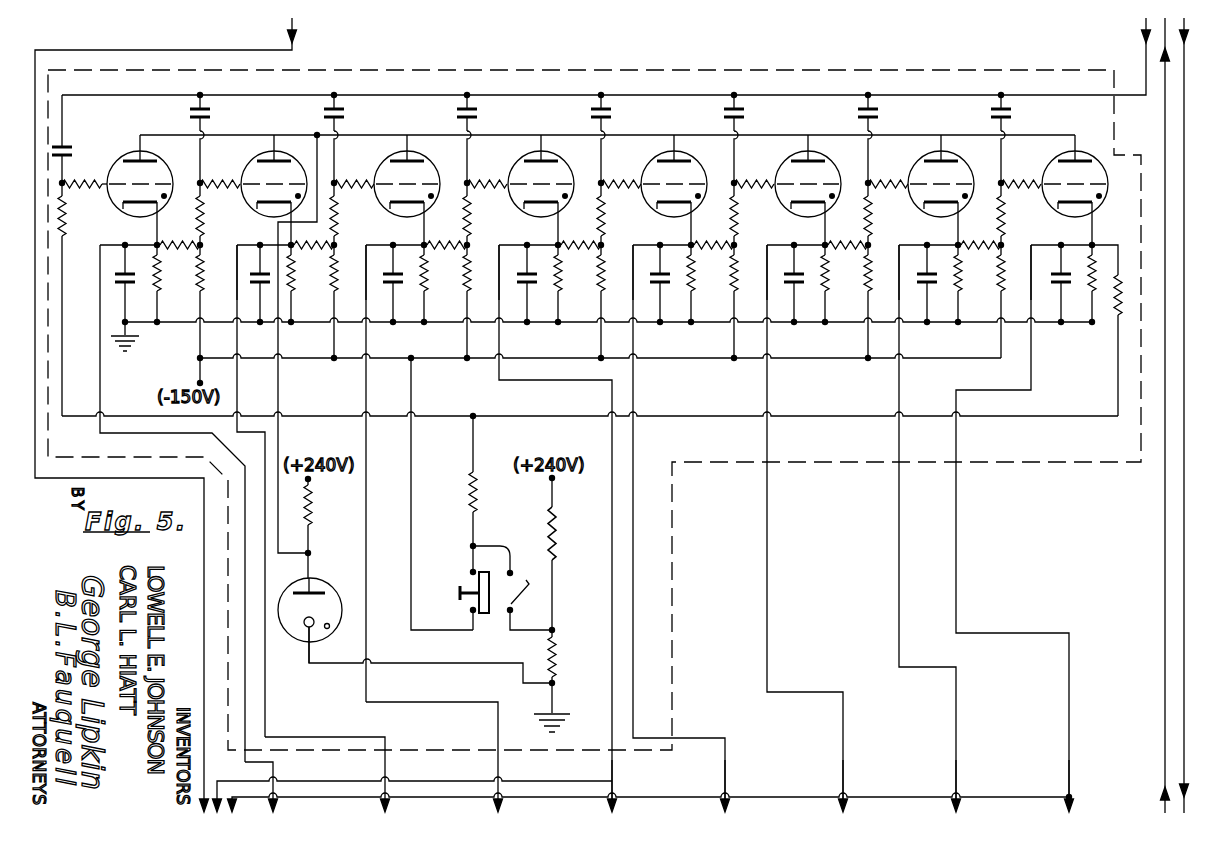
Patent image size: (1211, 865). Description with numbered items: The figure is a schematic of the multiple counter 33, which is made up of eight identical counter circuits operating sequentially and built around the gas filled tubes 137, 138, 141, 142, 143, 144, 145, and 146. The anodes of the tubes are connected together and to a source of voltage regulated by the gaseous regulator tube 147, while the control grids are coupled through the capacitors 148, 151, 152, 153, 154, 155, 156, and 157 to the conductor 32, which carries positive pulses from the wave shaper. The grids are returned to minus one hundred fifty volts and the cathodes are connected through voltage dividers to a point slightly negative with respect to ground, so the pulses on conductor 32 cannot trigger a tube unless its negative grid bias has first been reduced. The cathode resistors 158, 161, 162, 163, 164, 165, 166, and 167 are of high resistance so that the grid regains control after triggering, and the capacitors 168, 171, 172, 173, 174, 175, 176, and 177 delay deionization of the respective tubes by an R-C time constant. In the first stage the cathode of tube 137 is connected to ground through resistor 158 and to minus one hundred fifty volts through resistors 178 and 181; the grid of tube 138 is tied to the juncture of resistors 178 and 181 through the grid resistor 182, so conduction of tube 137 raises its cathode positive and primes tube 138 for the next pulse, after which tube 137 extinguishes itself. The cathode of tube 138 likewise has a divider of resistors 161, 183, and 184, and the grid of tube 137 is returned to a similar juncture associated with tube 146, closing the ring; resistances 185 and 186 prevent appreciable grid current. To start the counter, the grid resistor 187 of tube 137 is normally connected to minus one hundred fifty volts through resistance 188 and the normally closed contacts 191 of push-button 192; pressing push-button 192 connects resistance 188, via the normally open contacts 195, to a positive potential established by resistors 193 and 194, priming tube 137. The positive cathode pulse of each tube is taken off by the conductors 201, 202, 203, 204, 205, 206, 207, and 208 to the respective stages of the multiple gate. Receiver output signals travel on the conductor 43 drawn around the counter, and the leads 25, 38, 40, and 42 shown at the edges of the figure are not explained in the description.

The conductor 25 is at (1184, 97).
The conductor 32 is at (576, 95).
The multiple counter 33 is at (686, 69).
The conductor 38 is at (1164, 137).
The conductor 40 is at (254, 780).
The conductor 42 is at (343, 770).
The conductor 43 is at (219, 49).
The gas filled tube 137 is at (112, 212).
The gas filled tube 138 is at (243, 205).
The gas filled tube 141 is at (378, 208).
The gas filled tube 142 is at (511, 208).
The gas filled tube 143 is at (644, 208).
The gas filled tube 144 is at (780, 215).
The gas filled tube 145 is at (914, 215).
The gas filled tube 146 is at (1044, 212).
The gaseous regulator tube 147 is at (332, 583).
The capacitor 148 is at (67, 149).
The capacitor 151 is at (210, 111).
The capacitor 152 is at (344, 111).
The capacitor 153 is at (477, 111).
The capacitor 154 is at (611, 111).
The capacitor 155 is at (744, 111).
The capacitor 156 is at (878, 111).
The capacitor 157 is at (1011, 111).
The cathode resistor 158 is at (170, 280).
The cathode resistor 161 is at (306, 280).
The cathode resistor 162 is at (427, 281).
The cathode resistor 163 is at (560, 279).
The cathode resistor 164 is at (703, 283).
The cathode resistor 165 is at (837, 277).
The cathode resistor 166 is at (972, 279).
The cathode resistor 167 is at (1096, 297).
The capacitor 168 is at (134, 282).
The capacitor 171 is at (263, 283).
The capacitor 172 is at (381, 273).
The capacitor 173 is at (514, 276).
The capacitor 174 is at (648, 276).
The capacitor 175 is at (780, 276).
The capacitor 176 is at (940, 273).
The capacitor 177 is at (1048, 276).
The resistor 178 is at (186, 240).
The resistor 181 is at (215, 312).
The grid resistor 182 is at (207, 219).
The resistor 183 is at (325, 243).
The resistor 184 is at (340, 266).
The resistance 185 is at (103, 178).
The resistance 186 is at (220, 176).
The grid resistor 187 is at (69, 221).
The resistance 188 is at (466, 496).
The normally closed contacts 191 is at (467, 583).
The push-button 192 is at (466, 606).
The resistor 193 is at (564, 537).
The resistor 194 is at (572, 658).
The normally open contacts 195 is at (520, 595).
The conductor 201 is at (274, 774).
The conductor 202 is at (390, 772).
The conductor 203 is at (499, 774).
The conductor 204 is at (611, 774).
The conductor 205 is at (723, 790).
The conductor 206 is at (844, 789).
The conductor 207 is at (955, 791).
The conductor 208 is at (1069, 784).